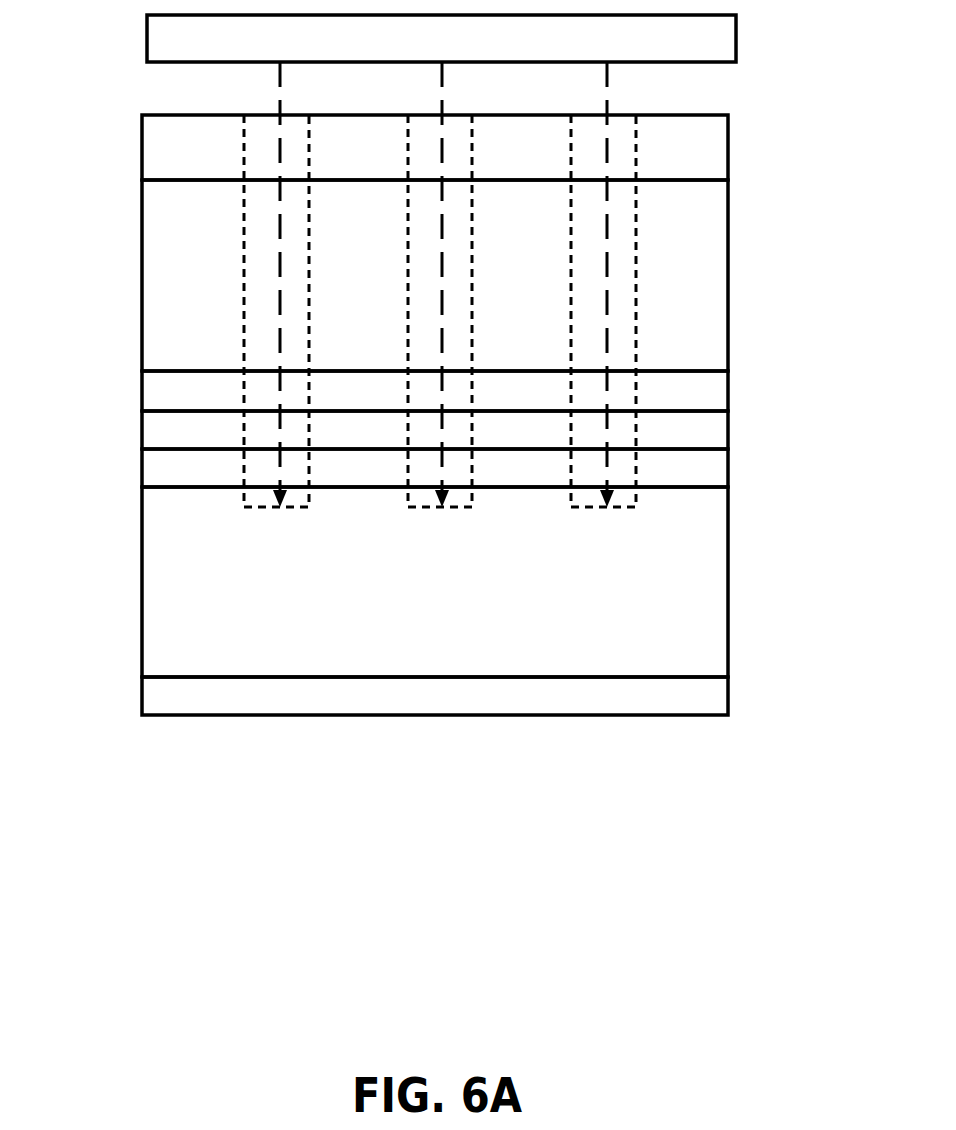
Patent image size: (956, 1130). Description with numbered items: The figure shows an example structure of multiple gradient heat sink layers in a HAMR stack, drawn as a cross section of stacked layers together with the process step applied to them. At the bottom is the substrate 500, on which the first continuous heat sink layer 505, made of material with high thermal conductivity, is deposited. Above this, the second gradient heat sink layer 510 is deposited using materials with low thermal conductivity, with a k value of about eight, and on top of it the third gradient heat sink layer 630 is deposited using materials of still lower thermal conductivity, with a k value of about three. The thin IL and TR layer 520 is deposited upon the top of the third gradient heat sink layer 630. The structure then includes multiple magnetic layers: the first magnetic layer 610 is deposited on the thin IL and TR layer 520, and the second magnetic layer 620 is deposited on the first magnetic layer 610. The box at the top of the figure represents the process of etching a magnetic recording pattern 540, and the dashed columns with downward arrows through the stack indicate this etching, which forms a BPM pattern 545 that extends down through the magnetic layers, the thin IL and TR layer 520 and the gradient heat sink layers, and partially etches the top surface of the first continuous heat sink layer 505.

The etching a magnetic recording pattern 540 is at (725, 47).
The second magnetic layer 620 is at (709, 157).
The first magnetic layer 610 is at (697, 303).
The BPM pattern 545 is at (405, 282).
The thin IL and TR layer 520 is at (158, 385).
The third gradient heat sink layer 630 is at (707, 425).
The second gradient heat sink layer 510 is at (710, 472).
The first continuous heat sink layer 505 is at (712, 617).
The substrate 500 is at (712, 697).